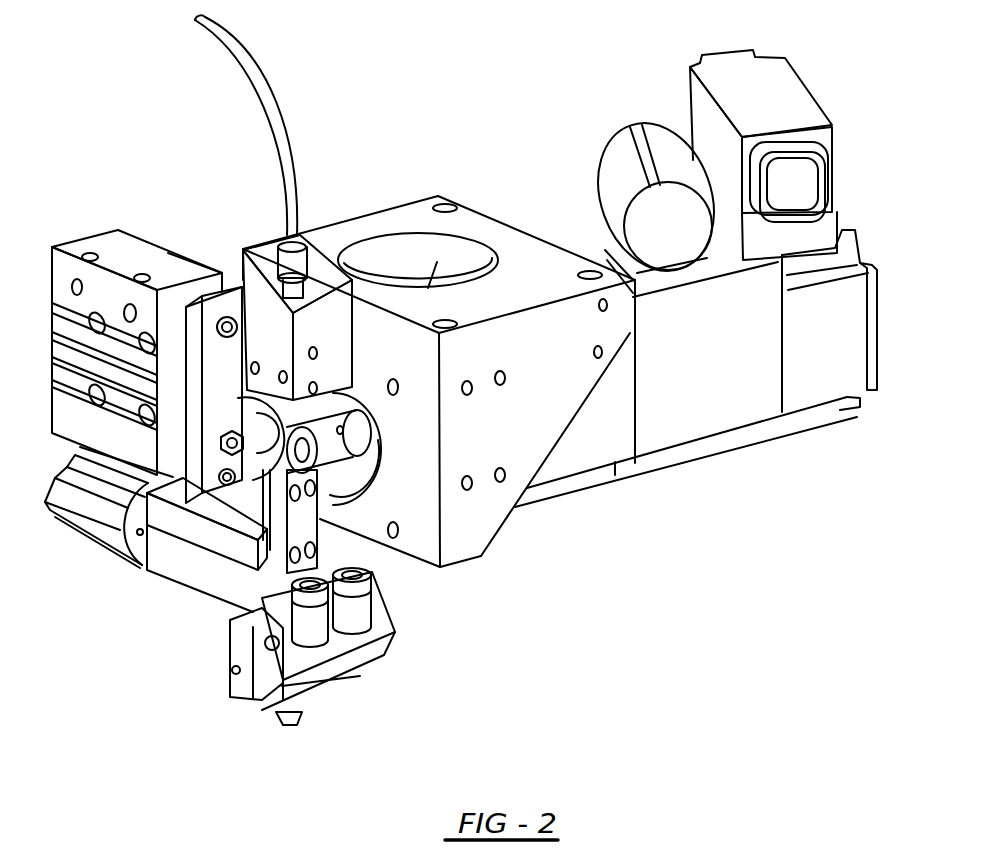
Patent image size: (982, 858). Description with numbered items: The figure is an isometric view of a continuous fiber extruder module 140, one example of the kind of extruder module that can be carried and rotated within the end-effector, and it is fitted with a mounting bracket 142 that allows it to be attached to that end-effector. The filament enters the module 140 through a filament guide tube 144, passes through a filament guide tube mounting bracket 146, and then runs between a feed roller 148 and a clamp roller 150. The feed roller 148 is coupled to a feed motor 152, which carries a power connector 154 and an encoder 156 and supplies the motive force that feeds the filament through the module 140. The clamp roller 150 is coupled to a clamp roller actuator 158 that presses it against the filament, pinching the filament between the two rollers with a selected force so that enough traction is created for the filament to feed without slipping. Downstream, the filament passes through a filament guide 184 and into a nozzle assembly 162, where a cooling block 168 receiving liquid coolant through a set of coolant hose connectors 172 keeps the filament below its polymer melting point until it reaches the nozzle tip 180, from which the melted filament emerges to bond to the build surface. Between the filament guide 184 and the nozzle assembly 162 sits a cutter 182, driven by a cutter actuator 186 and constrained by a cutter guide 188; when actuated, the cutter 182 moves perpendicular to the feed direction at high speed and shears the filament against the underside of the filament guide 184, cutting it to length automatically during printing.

The continuous fiber extruder module 140 is at (440, 82).
The mounting bracket 142 is at (543, 403).
The filament guide tube 144 is at (266, 100).
The filament guide tube mounting bracket 146 is at (267, 335).
The feed roller 148 is at (330, 453).
The clamp roller 150 is at (253, 407).
The feed motor 152 is at (827, 345).
The power connector 154 is at (622, 158).
The encoder 156 is at (785, 92).
The clamp roller actuator 158 is at (92, 427).
The nozzle assembly 162 is at (387, 682).
The cooling block 168 is at (316, 663).
The coolant hose connectors 172 is at (362, 610).
The nozzle tip 180 is at (288, 708).
The cutter 182 is at (257, 586).
The filament guide 184 is at (300, 532).
The cutter actuator 186 is at (88, 502).
The cutter guide 188 is at (227, 570).